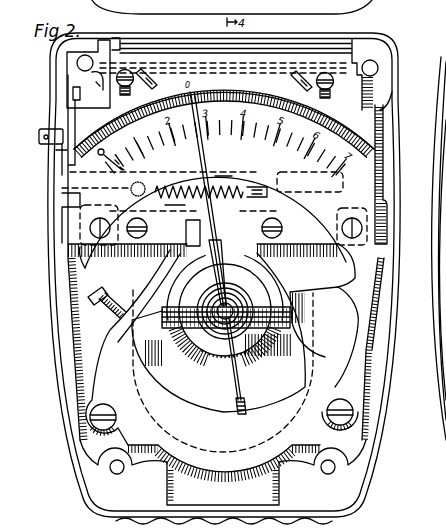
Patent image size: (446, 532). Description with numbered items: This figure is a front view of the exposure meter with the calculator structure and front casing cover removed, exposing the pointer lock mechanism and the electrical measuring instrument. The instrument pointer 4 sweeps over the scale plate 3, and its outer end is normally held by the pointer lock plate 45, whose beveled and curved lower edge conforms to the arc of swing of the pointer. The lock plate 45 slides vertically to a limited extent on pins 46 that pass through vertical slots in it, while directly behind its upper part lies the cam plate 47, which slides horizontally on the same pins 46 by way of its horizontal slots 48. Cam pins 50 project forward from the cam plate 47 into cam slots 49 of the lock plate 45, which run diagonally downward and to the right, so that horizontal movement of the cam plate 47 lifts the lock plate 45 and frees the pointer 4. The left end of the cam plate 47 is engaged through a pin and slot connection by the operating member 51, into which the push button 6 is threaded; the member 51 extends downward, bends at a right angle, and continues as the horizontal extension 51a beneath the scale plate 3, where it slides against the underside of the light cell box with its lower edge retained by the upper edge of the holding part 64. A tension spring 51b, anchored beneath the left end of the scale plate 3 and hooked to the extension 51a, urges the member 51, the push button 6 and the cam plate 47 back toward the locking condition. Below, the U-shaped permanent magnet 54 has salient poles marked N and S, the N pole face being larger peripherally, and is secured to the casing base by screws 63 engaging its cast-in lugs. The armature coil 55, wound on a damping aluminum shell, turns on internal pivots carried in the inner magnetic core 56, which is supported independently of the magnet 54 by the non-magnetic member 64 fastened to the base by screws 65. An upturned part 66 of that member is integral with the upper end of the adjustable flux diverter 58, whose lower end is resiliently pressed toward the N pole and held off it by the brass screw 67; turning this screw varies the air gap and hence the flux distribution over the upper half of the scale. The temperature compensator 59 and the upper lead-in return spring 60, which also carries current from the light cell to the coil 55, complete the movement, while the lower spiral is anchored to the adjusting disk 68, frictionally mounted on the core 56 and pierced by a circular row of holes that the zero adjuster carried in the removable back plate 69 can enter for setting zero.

The scale plate 3 is at (358, 158).
The instrument pointer 4 is at (199, 142).
The push button 6 is at (52, 128).
The pointer lock plate 45 is at (111, 151).
The pins 46 is at (118, 46).
The cam plate 47 is at (95, 79).
The horizontal slots 48 is at (78, 60).
The cam slots 49 is at (168, 68).
The cam pins 50 is at (143, 72).
The operating member 51 is at (62, 154).
The horizontal extension 51a is at (222, 172).
The tension spring 51b is at (175, 212).
The permanent magnet 54 is at (176, 407).
The armature coil 55 is at (288, 327).
The inner magnetic core 56 is at (258, 302).
The flux diverter 58 is at (153, 283).
The temperature compensator 59 is at (253, 364).
The lead-in return spring 60 is at (206, 297).
The screws 63 is at (108, 404).
The holding part 64 is at (199, 216).
The screws 65 is at (136, 220).
The upturned part 66 is at (192, 239).
The brass screw 67 is at (96, 291).
The adjusting disk 68 is at (213, 363).
The removable back plate 69 is at (276, 388).